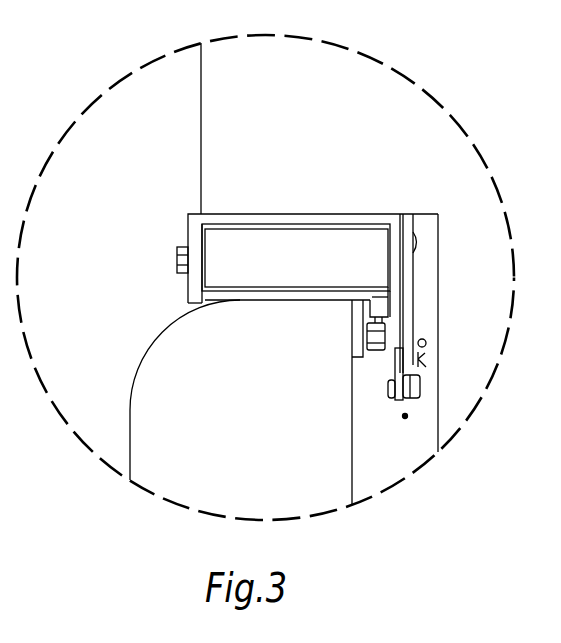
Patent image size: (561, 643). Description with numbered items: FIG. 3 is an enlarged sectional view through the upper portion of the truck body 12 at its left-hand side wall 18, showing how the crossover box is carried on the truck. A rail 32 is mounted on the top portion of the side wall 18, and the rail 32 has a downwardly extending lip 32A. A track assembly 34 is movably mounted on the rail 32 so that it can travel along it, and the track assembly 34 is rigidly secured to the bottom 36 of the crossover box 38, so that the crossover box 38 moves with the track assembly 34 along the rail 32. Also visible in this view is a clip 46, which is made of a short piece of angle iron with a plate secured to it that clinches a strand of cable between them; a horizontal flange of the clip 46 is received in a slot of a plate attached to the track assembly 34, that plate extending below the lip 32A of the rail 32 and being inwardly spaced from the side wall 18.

The truck body 12 is at (137, 384).
The left-hand side wall 18 is at (353, 461).
The rail 32 is at (287, 296).
The downwardly extending lip 32A is at (353, 338).
The track assembly 34 is at (185, 214).
The bottom 36 is at (293, 214).
The crossover box 38 is at (201, 137).
The clip 46 is at (426, 343).